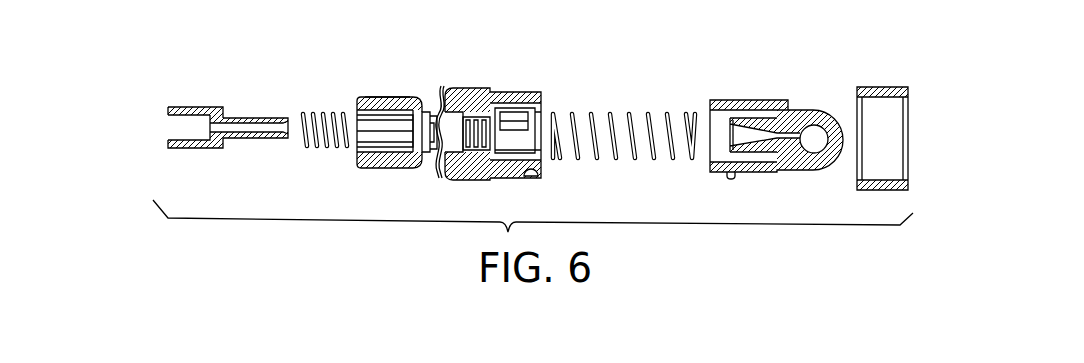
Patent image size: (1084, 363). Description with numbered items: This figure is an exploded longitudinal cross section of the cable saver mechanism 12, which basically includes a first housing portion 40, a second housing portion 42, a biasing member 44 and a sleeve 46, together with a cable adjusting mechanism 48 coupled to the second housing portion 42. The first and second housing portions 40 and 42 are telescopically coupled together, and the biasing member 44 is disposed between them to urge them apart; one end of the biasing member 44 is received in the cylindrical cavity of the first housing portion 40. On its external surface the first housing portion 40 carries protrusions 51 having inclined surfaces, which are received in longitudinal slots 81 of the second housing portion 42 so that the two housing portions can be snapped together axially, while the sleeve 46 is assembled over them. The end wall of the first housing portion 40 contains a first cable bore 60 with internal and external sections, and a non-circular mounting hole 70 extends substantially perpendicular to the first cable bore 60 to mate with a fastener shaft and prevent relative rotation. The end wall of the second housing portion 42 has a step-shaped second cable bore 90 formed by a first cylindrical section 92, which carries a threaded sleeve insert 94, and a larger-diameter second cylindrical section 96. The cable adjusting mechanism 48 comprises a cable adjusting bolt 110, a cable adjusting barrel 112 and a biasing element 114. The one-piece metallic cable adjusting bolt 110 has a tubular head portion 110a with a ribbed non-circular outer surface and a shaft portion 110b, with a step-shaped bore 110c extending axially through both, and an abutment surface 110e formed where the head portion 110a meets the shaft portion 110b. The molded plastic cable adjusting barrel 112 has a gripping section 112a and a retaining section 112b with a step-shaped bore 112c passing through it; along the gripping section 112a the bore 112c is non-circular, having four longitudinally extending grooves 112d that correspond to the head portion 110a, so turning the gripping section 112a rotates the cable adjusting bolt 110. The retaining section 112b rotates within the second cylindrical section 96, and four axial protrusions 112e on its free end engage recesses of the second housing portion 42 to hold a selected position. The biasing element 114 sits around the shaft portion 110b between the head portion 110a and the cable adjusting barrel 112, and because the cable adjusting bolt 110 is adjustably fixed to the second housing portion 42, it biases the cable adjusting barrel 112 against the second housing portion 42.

The cable saver mechanism 12 is at (713, 75).
The first housing portion 40 is at (747, 100).
The second housing portion 42 is at (468, 87).
The biasing member 44 is at (593, 112).
The sleeve 46 is at (873, 83).
The cable adjusting mechanism 48 is at (422, 92).
The protrusions 51 is at (733, 180).
The first cable bore 60 is at (743, 135).
The mounting hole 70 is at (807, 125).
The slots 81 is at (538, 163).
The second cable bore 90 is at (542, 93).
The first cylindrical section 92 is at (490, 140).
The threaded sleeve insert 94 is at (500, 118).
The second cylindrical section 96 is at (443, 110).
The cable adjusting bolt 110 is at (188, 152).
The head portion 110a is at (178, 150).
The shaft portion 110b is at (250, 138).
The bore 110c is at (237, 122).
The abutment surface 110e is at (210, 119).
The cable adjusting barrel 112 is at (373, 167).
The gripping section 112a is at (415, 167).
The retaining section 112b is at (438, 110).
The step-shaped bore 112c is at (390, 115).
The longitudinally extending grooves 112d is at (360, 161).
The protrusions 112e is at (443, 168).
The biasing element 114 is at (303, 148).